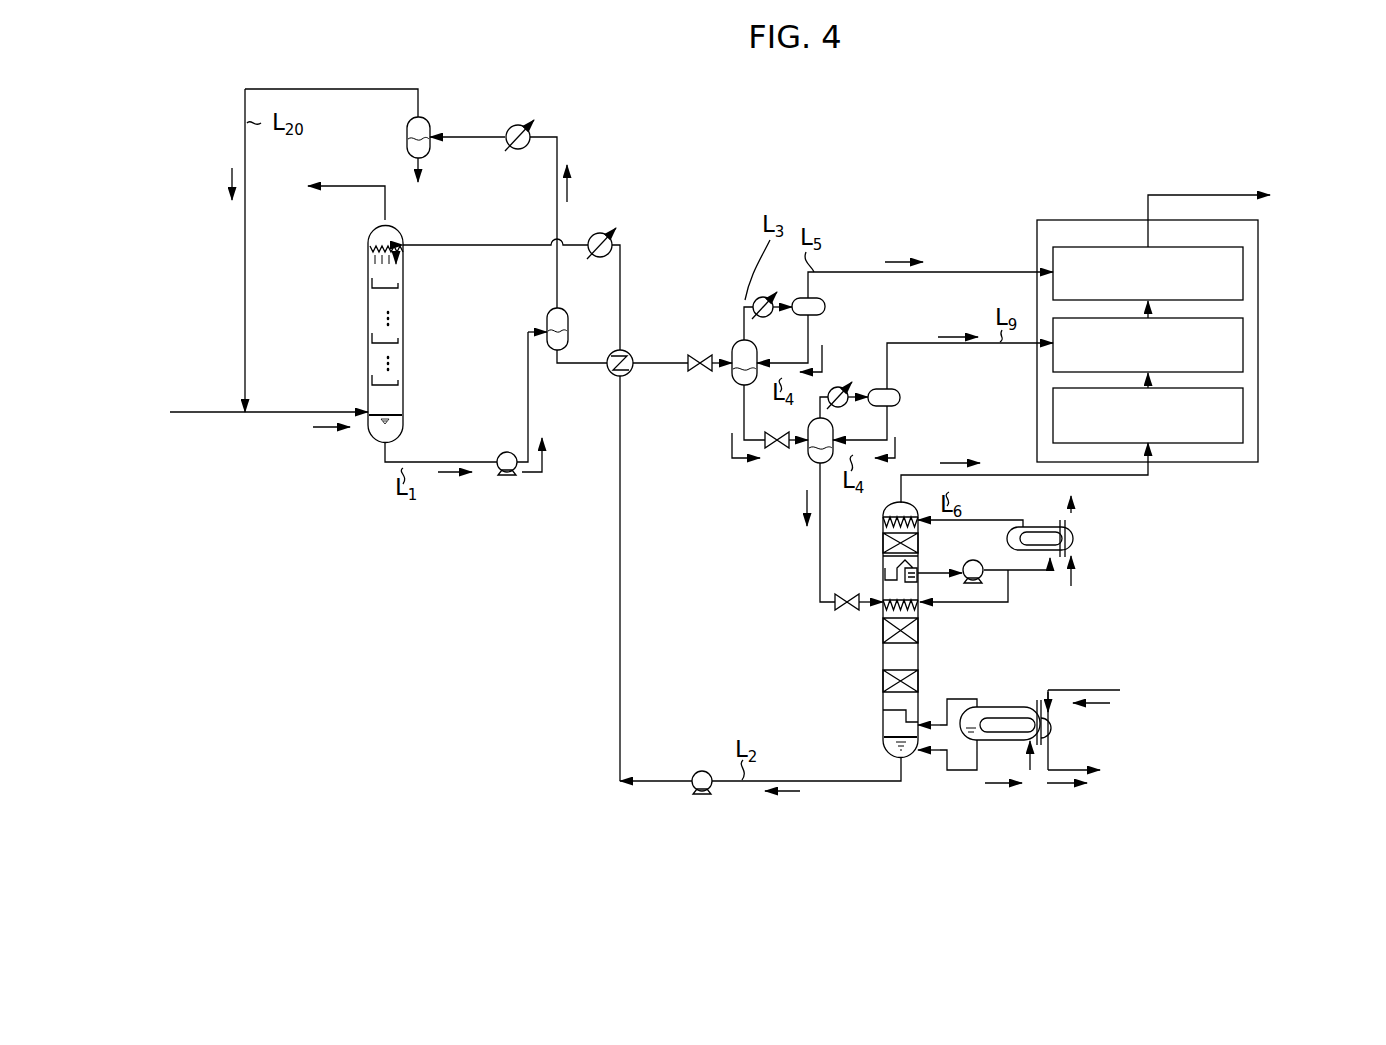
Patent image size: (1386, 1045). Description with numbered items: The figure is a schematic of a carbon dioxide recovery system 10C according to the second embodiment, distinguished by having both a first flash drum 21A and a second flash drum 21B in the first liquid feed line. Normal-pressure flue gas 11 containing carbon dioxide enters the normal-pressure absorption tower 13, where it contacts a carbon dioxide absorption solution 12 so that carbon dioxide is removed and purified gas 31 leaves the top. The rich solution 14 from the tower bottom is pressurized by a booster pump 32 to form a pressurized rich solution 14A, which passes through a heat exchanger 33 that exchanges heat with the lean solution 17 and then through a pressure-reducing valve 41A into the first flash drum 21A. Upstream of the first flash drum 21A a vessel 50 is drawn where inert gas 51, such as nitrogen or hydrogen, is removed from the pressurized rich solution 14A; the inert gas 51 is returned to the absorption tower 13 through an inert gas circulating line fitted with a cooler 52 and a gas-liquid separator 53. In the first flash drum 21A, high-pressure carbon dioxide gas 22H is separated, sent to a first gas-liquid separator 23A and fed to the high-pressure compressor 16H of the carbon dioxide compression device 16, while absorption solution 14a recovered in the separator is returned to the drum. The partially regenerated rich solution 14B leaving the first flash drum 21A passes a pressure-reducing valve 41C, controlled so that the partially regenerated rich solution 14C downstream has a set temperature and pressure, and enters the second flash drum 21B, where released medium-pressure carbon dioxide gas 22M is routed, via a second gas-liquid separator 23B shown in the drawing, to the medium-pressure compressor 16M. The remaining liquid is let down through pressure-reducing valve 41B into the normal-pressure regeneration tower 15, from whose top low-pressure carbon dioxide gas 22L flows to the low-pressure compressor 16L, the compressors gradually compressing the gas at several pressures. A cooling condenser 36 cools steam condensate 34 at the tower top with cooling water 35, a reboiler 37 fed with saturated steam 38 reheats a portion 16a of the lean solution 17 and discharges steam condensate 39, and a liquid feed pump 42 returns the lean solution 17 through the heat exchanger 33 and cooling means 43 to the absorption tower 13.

The carbon dioxide recovery system 10C is at (815, 170).
The normal-pressure flue gas 11 is at (328, 432).
The carbon dioxide absorption solution 12 is at (370, 250).
The normal-pressure absorption tower 13 is at (352, 310).
The rich solution 14 is at (452, 474).
The pressurized rich solution 14A is at (536, 480).
The partially regenerated rich solution 14B is at (730, 457).
The partially regenerated rich solution 14C is at (806, 493).
The absorption solution 14a is at (828, 362).
The normal-pressure regeneration tower 15 is at (925, 645).
The carbon dioxide compression device 16 is at (1181, 334).
The high-pressure compressor 16H is at (1244, 271).
The medium-pressure compressor 16M is at (1244, 342).
The low-pressure compressor 16L is at (1244, 414).
The portion of the lean solution 16a is at (998, 785).
The lean solution 17 is at (786, 794).
The first flash drum 21A is at (732, 338).
The second flash drum 21B is at (806, 462).
The high-pressure carbon dioxide gas 22H is at (889, 260).
The medium-pressure carbon dioxide gas 22M is at (942, 338).
The low-pressure carbon dioxide gas 22L is at (940, 462).
The first gas-liquid separator 23A is at (826, 312).
The second gas-liquid separator 23B is at (901, 398).
The purified gas 31 is at (358, 186).
The booster pump 32 is at (500, 452).
The heat exchanger 33 is at (617, 352).
The steam condensate 34 is at (919, 573).
The cooling water 35 is at (1071, 578).
The cooling condenser 36 is at (1040, 527).
The reboiler 37 is at (1000, 700).
The saturated steam 38 is at (1096, 704).
The steam condensate 39 is at (1059, 785).
The pressure-reducing valve 41A is at (690, 352).
The pressure-reducing valve 41B is at (848, 593).
The pressure-reducing valve 41C is at (776, 452).
The liquid feed pump 42 is at (700, 796).
The cooling means 43 is at (604, 258).
The gas-liquid separator 50 is at (547, 319).
The inert gas 51 is at (568, 182).
The cooler 52 is at (519, 150).
The gas-liquid separator 53 is at (430, 151).